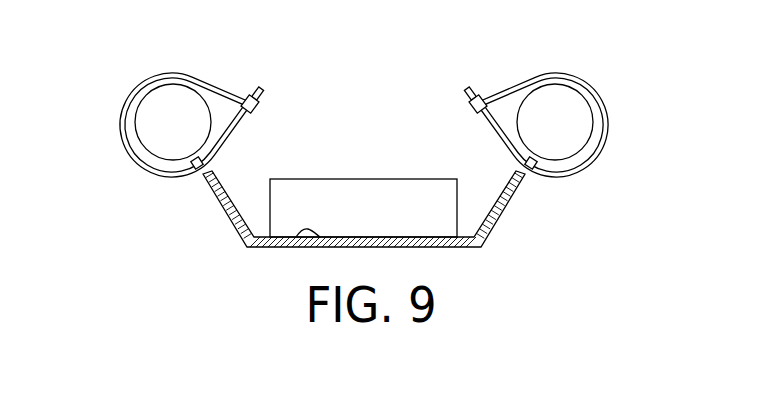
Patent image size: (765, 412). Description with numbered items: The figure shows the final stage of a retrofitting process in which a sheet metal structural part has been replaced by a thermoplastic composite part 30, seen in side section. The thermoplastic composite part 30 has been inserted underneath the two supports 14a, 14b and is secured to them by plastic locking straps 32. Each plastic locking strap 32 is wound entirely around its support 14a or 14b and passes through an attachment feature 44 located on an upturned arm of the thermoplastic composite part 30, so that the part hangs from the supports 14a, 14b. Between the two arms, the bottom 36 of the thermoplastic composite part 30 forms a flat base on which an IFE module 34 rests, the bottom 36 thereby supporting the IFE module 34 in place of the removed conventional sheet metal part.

The thermoplastic composite part 30 is at (485, 248).
The plastic locking straps 32 is at (128, 101).
The support 14a is at (187, 130).
The support 14b is at (540, 131).
The IFE module 34 is at (352, 219).
The bottom 36 is at (294, 237).
The attachment features 44 is at (205, 177).